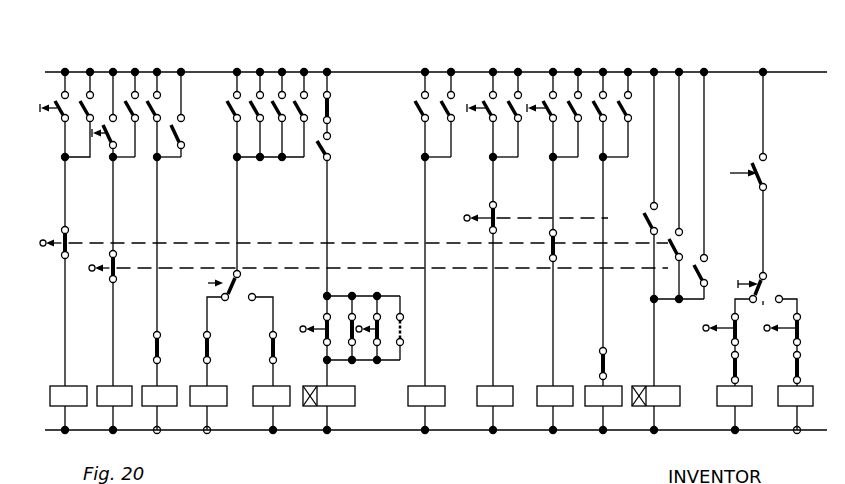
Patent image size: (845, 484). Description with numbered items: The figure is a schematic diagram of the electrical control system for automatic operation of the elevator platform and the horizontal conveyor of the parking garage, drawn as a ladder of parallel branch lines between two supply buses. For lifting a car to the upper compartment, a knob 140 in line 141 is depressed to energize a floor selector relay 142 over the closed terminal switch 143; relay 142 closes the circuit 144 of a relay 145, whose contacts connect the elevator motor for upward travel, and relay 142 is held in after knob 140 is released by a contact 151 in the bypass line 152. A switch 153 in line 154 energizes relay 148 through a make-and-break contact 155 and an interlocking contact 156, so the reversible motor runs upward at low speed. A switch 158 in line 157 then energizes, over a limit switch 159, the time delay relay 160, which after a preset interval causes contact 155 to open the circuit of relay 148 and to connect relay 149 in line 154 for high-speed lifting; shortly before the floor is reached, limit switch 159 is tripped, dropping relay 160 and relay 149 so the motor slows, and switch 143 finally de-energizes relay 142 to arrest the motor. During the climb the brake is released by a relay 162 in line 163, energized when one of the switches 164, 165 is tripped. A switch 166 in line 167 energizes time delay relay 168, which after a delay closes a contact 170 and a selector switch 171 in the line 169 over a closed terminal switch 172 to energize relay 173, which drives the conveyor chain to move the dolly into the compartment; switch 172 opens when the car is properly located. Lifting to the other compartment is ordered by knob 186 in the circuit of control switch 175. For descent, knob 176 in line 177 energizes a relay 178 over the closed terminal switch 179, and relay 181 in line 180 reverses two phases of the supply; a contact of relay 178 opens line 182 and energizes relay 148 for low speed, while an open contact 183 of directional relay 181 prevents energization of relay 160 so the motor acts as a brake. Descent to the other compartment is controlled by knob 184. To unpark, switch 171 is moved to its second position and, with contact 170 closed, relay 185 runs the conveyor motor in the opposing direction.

The knob 140 is at (48, 115).
The line 141 is at (68, 321).
The floor selector relay 142 is at (75, 395).
The terminal switch 143 is at (57, 229).
The circuit 144 is at (157, 308).
The relay 145 is at (163, 395).
The relay 148 is at (213, 395).
The relay 149 is at (280, 395).
The contact 151 is at (79, 108).
The bypass line 152 is at (90, 160).
The switch 153 is at (235, 110).
The line 154 is at (240, 222).
The make-and-break contact 155 is at (239, 281).
The interlocking contact 156 is at (218, 338).
The line 157 is at (331, 222).
The switch 158 is at (332, 147).
The limit switch 159 is at (318, 333).
The time delay relay 160 is at (346, 401).
The relay 162 is at (436, 395).
The line 163 is at (428, 324).
The switch 164 is at (418, 108).
The switch 165 is at (441, 120).
The switch 166 is at (646, 218).
The line 167 is at (652, 288).
The time delay relay 168 is at (665, 395).
The line 169 is at (735, 420).
The contact 170 is at (767, 173).
The selector switch 171 is at (770, 284).
The terminal switch 172 is at (718, 325).
The relay 173 is at (740, 398).
The control switch 175 is at (117, 265).
The knob 176 is at (490, 110).
The line 177 is at (497, 320).
The relay 178 is at (505, 395).
The terminal switch 179 is at (497, 216).
The line 180 is at (604, 315).
The relay 181 is at (612, 395).
The line 182 is at (275, 319).
The contact 183 is at (333, 109).
The knob 184 is at (550, 110).
The relay 185 is at (805, 393).
The knob 186 is at (114, 146).